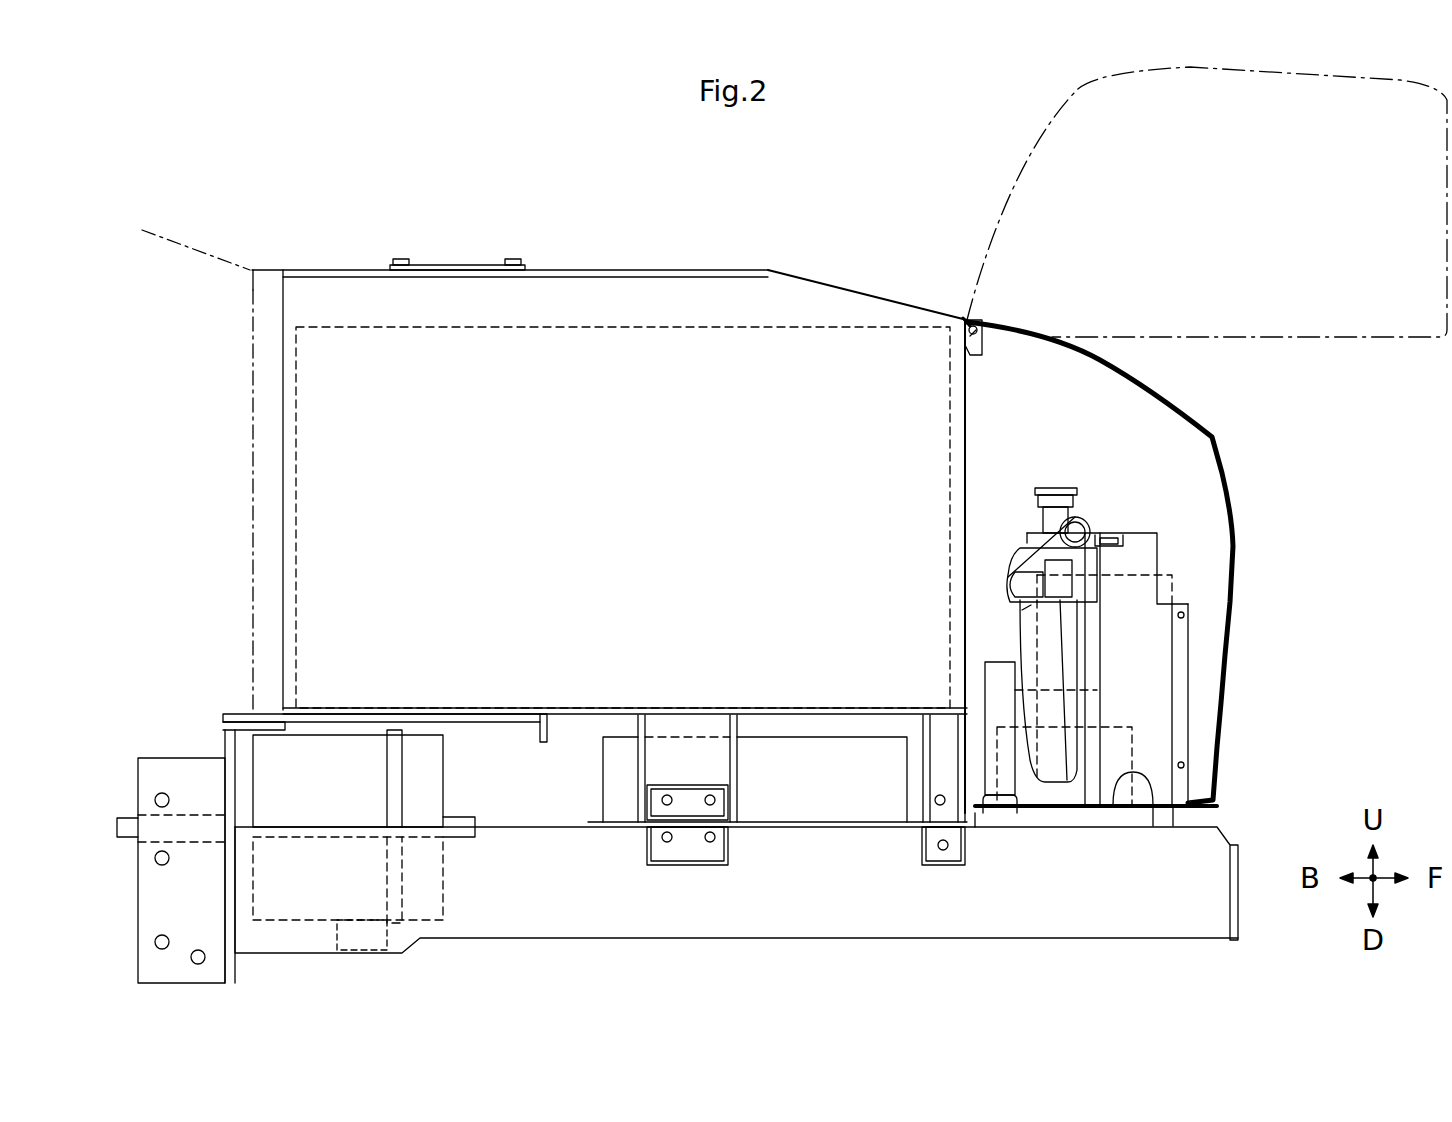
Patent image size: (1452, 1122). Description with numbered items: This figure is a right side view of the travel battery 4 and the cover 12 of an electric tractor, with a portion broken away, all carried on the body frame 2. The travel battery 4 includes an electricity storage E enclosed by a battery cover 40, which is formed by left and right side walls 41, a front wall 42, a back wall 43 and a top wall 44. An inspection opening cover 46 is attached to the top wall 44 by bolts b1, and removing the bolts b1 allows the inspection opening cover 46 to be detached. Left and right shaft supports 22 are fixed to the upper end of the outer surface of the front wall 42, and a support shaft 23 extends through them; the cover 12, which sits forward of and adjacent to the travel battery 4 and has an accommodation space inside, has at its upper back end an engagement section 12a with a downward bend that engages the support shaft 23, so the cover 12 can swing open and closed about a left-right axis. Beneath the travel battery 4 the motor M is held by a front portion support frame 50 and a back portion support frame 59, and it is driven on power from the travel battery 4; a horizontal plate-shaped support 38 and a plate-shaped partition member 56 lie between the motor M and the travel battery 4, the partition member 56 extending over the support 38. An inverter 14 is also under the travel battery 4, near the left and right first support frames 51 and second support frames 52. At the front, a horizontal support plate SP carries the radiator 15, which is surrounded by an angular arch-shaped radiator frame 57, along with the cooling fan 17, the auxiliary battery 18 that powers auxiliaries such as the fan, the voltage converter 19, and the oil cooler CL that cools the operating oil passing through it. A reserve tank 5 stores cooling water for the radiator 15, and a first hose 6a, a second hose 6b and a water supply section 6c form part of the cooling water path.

The body frame 2 is at (1198, 848).
The travel battery 4 is at (583, 457).
The reserve tank 5 is at (1010, 615).
The first hose 6a is at (1030, 562).
The second hose 6b is at (1080, 518).
The water supply section 6c is at (1053, 487).
The cover 12 is at (1030, 145).
The engagement section 12a is at (965, 318).
The inverter 14 is at (793, 752).
The radiator 15 is at (1085, 568).
The cooling fan 17 is at (1020, 600).
The auxiliary battery 18 is at (1135, 745).
The voltage converter 19 is at (1180, 642).
The shaft supports 22 is at (968, 350).
The support shaft 23 is at (978, 340).
The plate-shaped support 38 is at (228, 738).
The battery cover 40 is at (665, 265).
The side walls 41 is at (795, 348).
The front wall 42 is at (970, 460).
The back wall 43 is at (283, 457).
The top wall 44 is at (590, 268).
The inspection opening cover 46 is at (455, 265).
The bolts b1 is at (398, 259).
The front portion support frame 50 is at (360, 928).
The first support frames 51 is at (940, 730).
The second support frames 52 is at (680, 762).
The plate-shaped partition member 56 is at (470, 725).
The radiator frame 57 is at (1135, 540).
The back portion support frame 59 is at (222, 745).
The oil cooler CL is at (987, 665).
The electricity storage E is at (345, 327).
The motor M is at (415, 745).
The support plate SP is at (1153, 808).